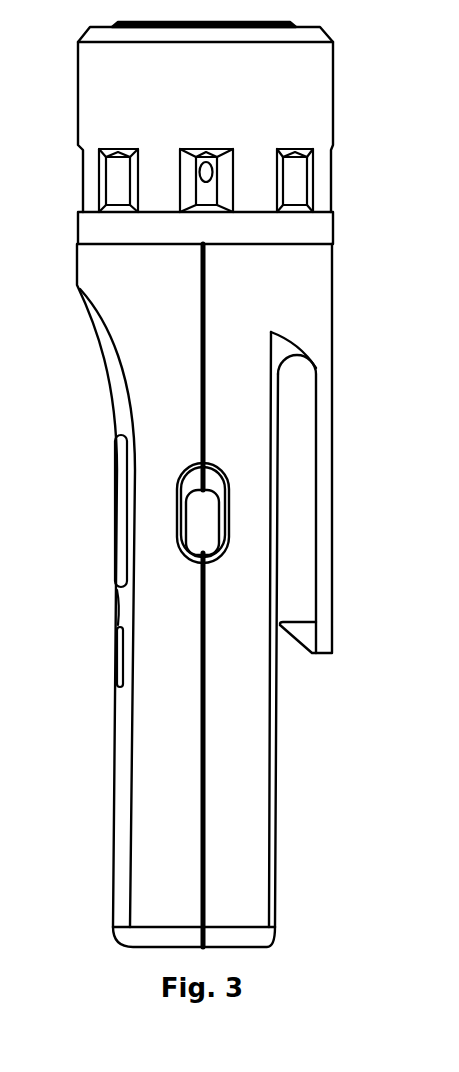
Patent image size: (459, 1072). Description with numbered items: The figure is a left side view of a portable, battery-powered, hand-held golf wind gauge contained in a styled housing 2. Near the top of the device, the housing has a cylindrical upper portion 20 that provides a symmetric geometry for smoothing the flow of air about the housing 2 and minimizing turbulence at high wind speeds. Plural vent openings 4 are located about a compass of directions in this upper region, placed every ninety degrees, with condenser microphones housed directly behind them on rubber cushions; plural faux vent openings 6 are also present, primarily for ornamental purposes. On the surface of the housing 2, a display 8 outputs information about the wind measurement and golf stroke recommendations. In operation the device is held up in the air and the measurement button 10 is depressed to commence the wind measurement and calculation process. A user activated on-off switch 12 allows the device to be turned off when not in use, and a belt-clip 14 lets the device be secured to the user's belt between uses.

The housing 2 is at (113, 773).
The vent openings 4 is at (203, 148).
The faux vent openings 6 is at (119, 148).
The display 8 is at (113, 512).
The measurement button 10 is at (115, 635).
The on-off switch 12 is at (197, 557).
The belt-clip 14 is at (331, 600).
The cylindrical upper portion 20 is at (336, 88).